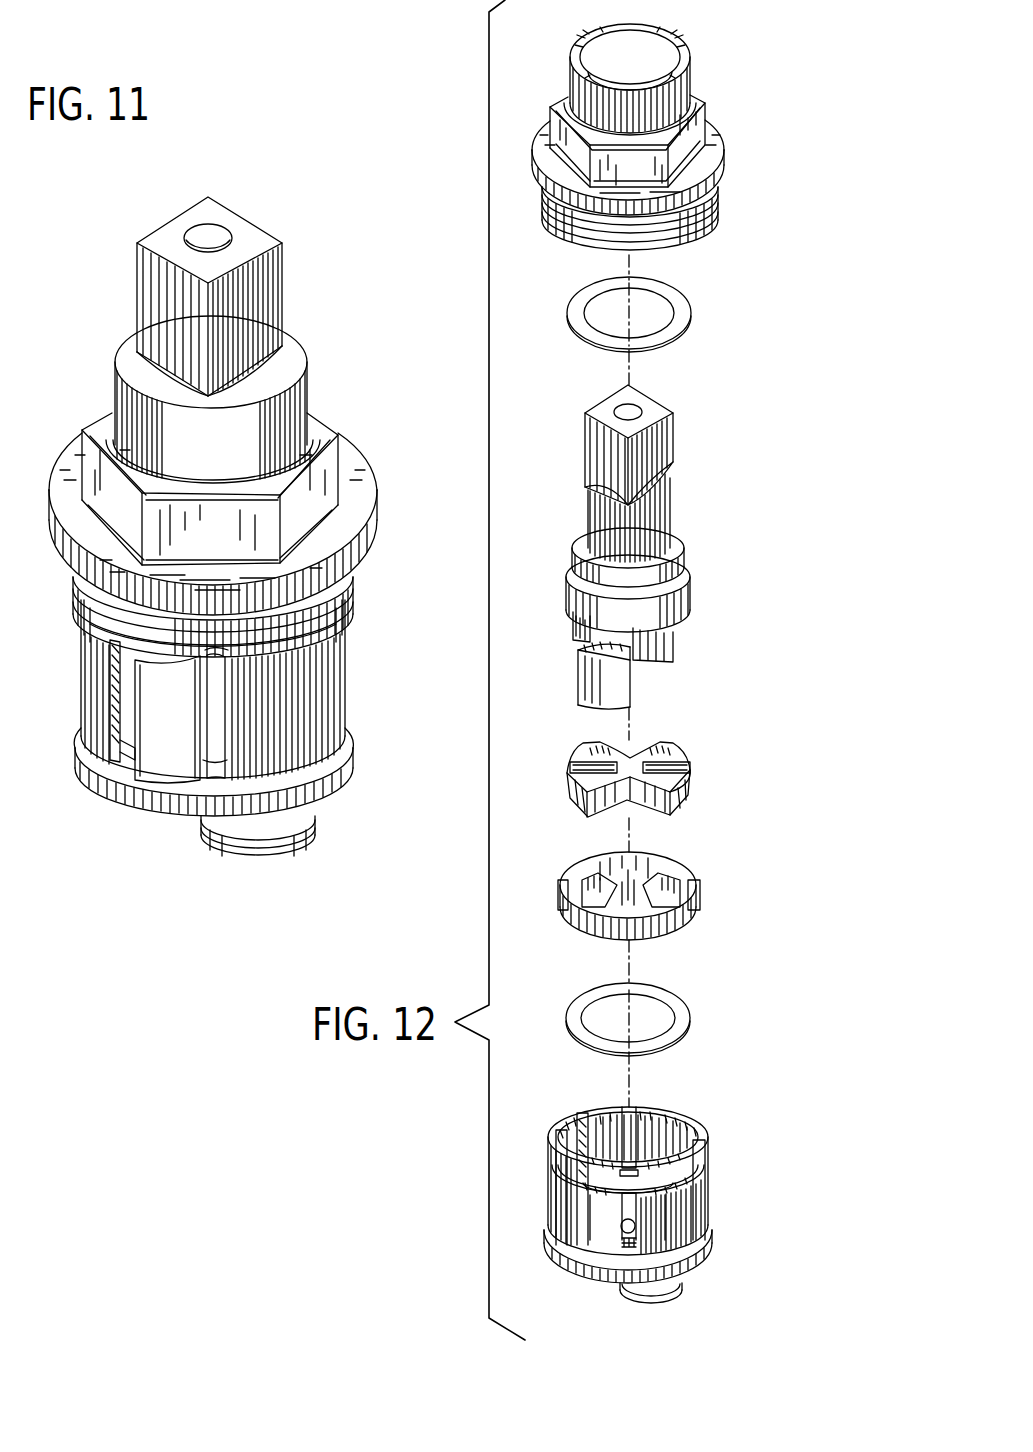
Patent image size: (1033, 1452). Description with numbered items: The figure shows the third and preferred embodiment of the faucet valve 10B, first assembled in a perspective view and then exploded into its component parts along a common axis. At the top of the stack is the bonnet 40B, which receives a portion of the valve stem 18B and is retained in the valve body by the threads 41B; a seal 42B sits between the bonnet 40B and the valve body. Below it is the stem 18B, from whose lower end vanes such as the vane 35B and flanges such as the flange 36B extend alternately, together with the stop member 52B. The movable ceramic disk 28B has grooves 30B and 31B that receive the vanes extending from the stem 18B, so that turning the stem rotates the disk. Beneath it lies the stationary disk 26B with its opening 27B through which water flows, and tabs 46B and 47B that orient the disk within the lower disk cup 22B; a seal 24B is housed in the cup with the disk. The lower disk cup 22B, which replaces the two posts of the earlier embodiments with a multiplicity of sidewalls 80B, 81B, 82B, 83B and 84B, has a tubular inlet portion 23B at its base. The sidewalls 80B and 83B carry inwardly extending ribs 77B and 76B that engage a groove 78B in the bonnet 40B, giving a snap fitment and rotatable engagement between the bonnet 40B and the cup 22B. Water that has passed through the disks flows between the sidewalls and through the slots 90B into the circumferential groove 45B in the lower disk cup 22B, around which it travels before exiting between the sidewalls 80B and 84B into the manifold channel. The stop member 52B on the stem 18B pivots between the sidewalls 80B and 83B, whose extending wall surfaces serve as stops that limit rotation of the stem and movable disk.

In FIG. 11, the faucet valve 10B is at (114, 391).
In FIG. 11, the valve stem 18B is at (287, 293).
In FIG. 12, the valve stem 18B is at (672, 515).
In FIG. 11, the lower disk cup 22B is at (348, 796).
In FIG. 12, the lower disk cup 22B is at (615, 1280).
In FIG. 11, the tubular inlet portion 23B is at (312, 836).
In FIG. 12, the tubular inlet portion 23B is at (690, 1288).
In FIG. 12, the seal 24B is at (690, 1022).
In FIG. 12, the stationary disk 26B is at (672, 866).
In FIG. 12, the opening 27B is at (585, 880).
In FIG. 12, the movable ceramic disk 28B is at (668, 740).
In FIG. 12, the groove 30B is at (570, 776).
In FIG. 12, the groove 31B is at (692, 772).
In FIG. 12, the vane 35B is at (662, 658).
In FIG. 12, the flange 36B is at (577, 640).
In FIG. 11, the bonnet 40B is at (335, 440).
In FIG. 12, the bonnet 40B is at (692, 138).
In FIG. 11, the threads 41B is at (345, 583).
In FIG. 12, the threads 41B is at (705, 222).
In FIG. 12, the seal 42B is at (682, 325).
In FIG. 11, the circumferential groove 45B is at (115, 784).
In FIG. 12, the circumferential groove 45B is at (710, 1250).
In FIG. 12, the tab 46B is at (562, 908).
In FIG. 12, the tab 47B is at (693, 908).
In FIG. 12, the stop member 52B is at (600, 695).
In FIG. 12, the rib 76B is at (578, 1125).
In FIG. 12, the rib 77B is at (700, 1162).
In FIG. 11, the groove 78B is at (205, 678).
In FIG. 11, the sidewall 80B is at (348, 650).
In FIG. 12, the sidewall 80B is at (692, 1208).
In FIG. 11, the sidewall 81B is at (178, 760).
In FIG. 12, the sidewall 81B is at (602, 1245).
In FIG. 11, the sidewall 82B is at (82, 700).
In FIG. 12, the sidewall 82B is at (565, 1200).
In FIG. 12, the sidewall 83B is at (603, 1112).
In FIG. 12, the sidewall 84B is at (678, 1115).
In FIG. 12, the slot 90B is at (580, 1235).